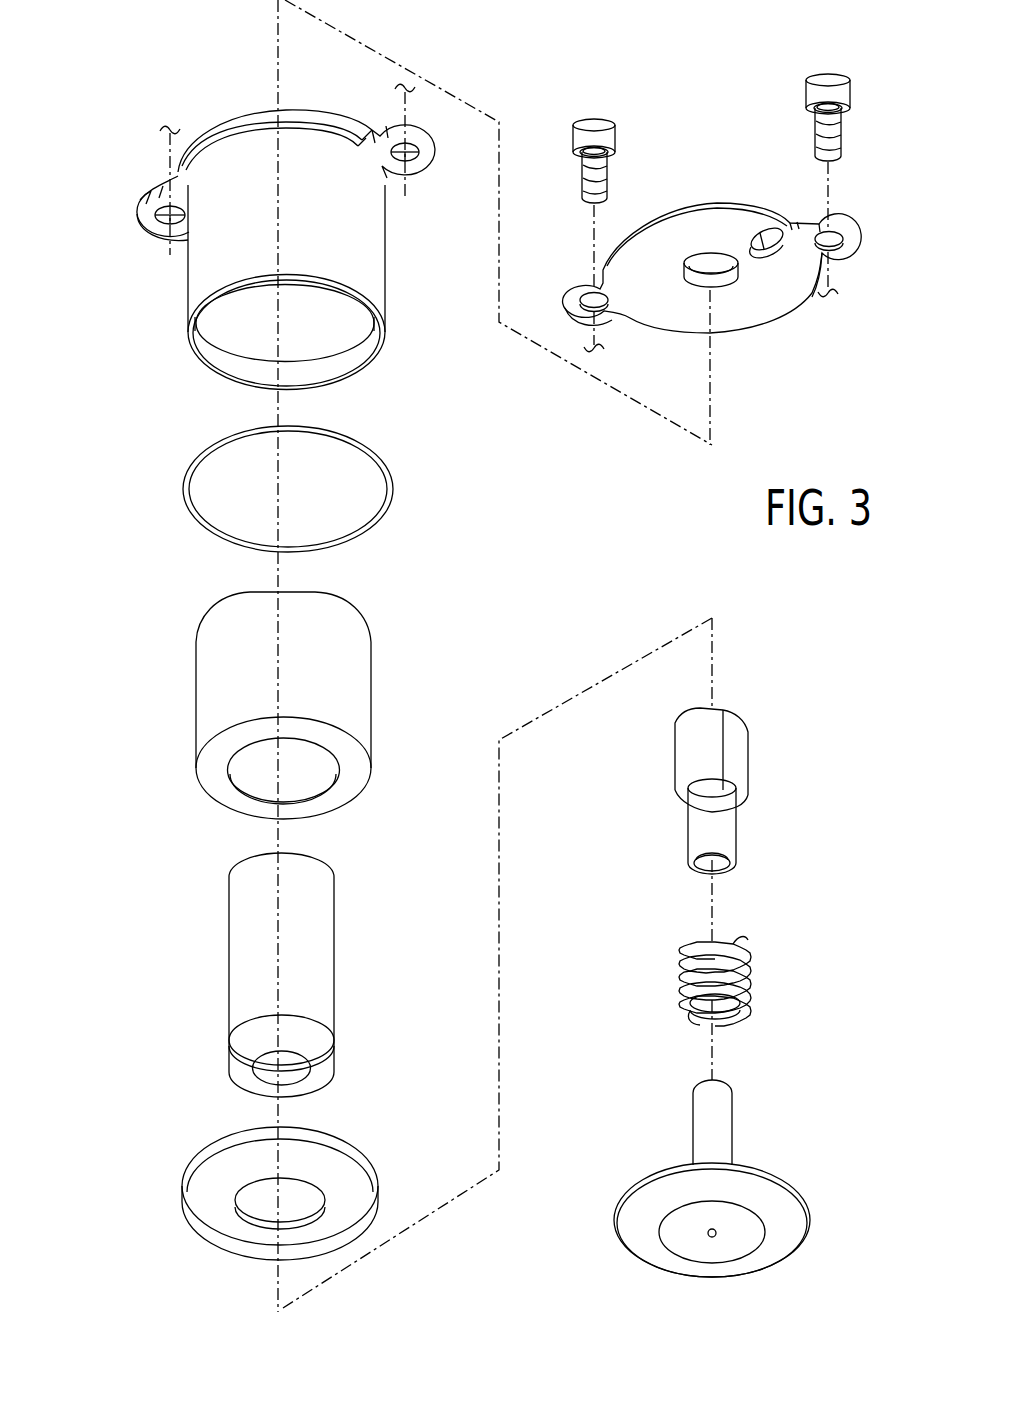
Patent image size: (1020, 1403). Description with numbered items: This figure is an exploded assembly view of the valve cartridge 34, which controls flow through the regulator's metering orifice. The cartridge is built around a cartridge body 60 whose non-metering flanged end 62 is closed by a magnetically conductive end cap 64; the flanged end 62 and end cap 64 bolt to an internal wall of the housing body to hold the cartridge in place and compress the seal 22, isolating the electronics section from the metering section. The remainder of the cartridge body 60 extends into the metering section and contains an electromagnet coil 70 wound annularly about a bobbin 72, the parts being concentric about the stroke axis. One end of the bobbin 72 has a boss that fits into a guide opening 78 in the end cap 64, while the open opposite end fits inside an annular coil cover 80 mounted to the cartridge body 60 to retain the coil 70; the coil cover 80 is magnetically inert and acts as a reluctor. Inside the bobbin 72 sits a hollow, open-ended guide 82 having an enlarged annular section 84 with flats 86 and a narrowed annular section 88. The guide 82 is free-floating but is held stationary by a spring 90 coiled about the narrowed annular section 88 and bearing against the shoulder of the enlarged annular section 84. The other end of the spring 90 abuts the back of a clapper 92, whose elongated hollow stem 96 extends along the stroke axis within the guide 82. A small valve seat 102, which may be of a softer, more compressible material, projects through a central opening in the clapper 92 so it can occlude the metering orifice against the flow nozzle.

The valve cartridge 34 is at (126, 157).
The cartridge body 60 is at (188, 280).
The non-metering flanged end 62 is at (152, 186).
The seal 22 is at (190, 494).
The electromagnet coil 70 is at (205, 697).
The bobbin 72 is at (240, 956).
The annular coil cover 80 is at (199, 1216).
The end cap 64 is at (763, 326).
The guide opening 78 is at (686, 274).
The guide 82 is at (720, 791).
The enlarged annular section 84 is at (685, 760).
The flats 86 is at (737, 748).
The narrowed annular section 88 is at (700, 838).
The spring 90 is at (733, 978).
The stem 96 is at (716, 1124).
The clapper 92 is at (777, 1176).
The valve seat 102 is at (712, 1238).